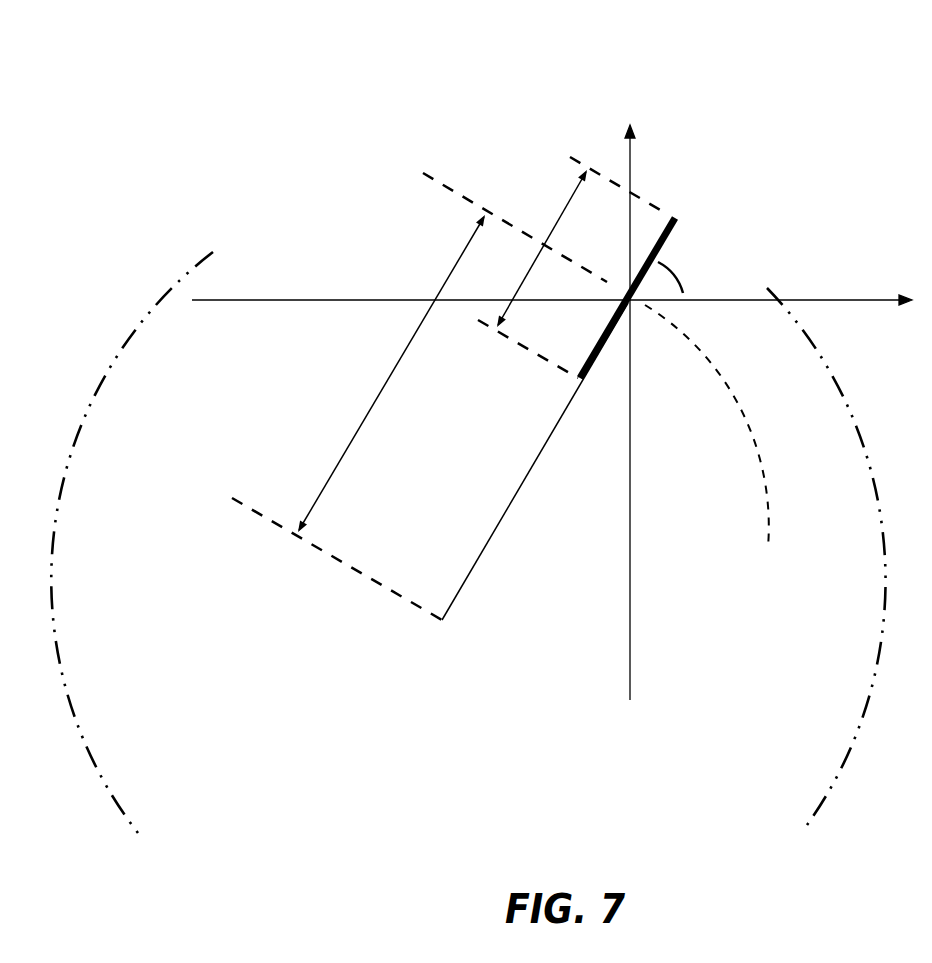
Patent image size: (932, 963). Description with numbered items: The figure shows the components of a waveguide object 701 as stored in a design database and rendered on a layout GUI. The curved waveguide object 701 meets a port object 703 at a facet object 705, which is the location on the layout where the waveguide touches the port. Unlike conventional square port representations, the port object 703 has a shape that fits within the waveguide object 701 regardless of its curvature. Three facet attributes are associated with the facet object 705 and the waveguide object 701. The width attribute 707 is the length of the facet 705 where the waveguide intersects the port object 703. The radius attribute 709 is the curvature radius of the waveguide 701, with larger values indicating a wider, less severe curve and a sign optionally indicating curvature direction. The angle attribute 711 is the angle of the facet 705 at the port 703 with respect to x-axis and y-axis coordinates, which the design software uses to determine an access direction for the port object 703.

The waveguide object 701 is at (720, 416).
The port object 703 is at (605, 313).
The facet object 705 is at (678, 216).
The width attribute 707 is at (572, 267).
The radius attribute 709 is at (430, 396).
The angle attribute 711 is at (701, 254).